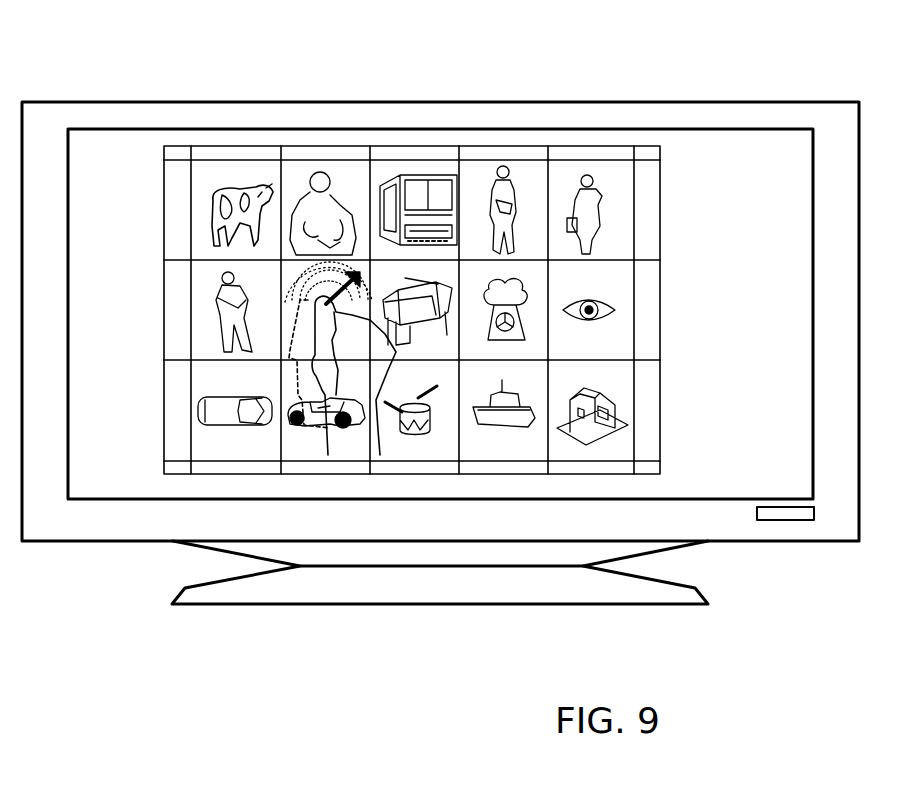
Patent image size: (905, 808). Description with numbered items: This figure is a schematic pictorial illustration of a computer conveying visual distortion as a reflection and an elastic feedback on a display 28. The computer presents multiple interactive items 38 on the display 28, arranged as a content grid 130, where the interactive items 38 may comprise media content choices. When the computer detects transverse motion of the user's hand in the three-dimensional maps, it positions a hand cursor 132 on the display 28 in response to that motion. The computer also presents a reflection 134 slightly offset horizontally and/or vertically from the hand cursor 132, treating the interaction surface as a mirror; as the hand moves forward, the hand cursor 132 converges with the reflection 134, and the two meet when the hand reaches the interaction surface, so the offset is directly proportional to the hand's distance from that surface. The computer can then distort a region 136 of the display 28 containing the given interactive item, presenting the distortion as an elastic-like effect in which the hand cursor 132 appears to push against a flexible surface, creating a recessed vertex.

The display 28 is at (758, 120).
The content grid 130 is at (662, 197).
The interactive items 38 is at (350, 168).
The region 136 is at (323, 302).
The hand cursor 132 is at (377, 395).
The reflection 134 is at (318, 388).